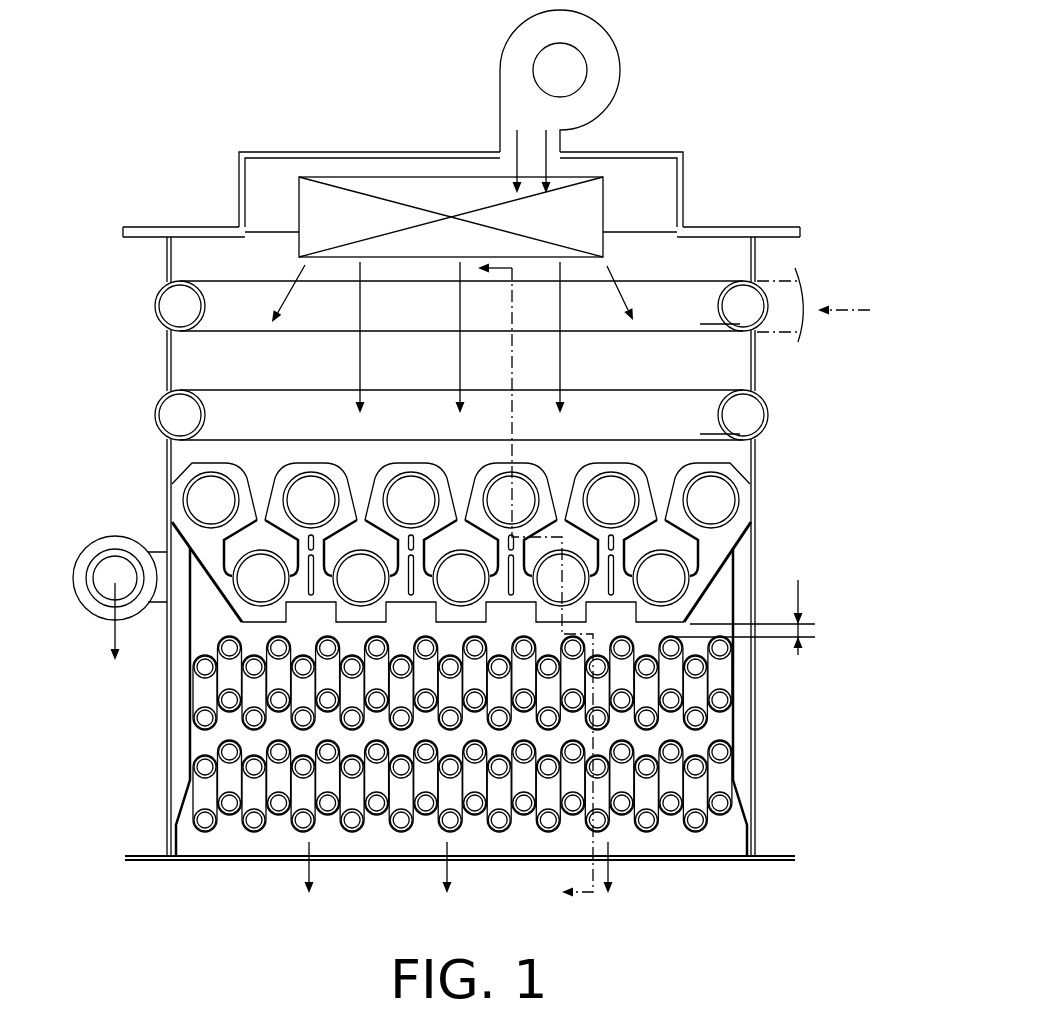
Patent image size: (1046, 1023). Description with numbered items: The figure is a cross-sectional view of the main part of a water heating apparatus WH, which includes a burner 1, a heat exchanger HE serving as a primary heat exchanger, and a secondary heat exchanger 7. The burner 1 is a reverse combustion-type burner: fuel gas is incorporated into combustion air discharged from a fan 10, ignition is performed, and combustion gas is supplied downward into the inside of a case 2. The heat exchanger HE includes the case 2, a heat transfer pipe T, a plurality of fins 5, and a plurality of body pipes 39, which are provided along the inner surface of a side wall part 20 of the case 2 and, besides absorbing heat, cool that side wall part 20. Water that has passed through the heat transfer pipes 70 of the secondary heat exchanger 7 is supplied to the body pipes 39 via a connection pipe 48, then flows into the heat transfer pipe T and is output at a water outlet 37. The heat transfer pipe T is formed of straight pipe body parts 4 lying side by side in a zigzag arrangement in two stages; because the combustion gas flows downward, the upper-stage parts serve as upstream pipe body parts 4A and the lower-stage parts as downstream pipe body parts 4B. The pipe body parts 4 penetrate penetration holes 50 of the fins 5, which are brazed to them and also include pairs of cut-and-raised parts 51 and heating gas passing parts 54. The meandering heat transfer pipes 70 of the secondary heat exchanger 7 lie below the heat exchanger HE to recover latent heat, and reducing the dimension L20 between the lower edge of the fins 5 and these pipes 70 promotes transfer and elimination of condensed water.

The water heating apparatus WH is at (160, 113).
The burner 1 is at (585, 214).
The fan 10 is at (612, 72).
The case 2 is at (166, 358).
The side wall part 20 is at (165, 252).
The body pipes 39 is at (193, 395).
The heat exchanger HE is at (469, 531).
The pipe body parts 4 is at (504, 531).
The upstream pipe body parts 4A is at (461, 464).
The downstream pipe body parts 4B is at (690, 588).
The heat transfer pipe T is at (221, 478).
The fins 5 is at (461, 512).
The penetration holes 50 is at (306, 495).
The cut-and-raised parts 51 is at (444, 522).
The heating gas passing parts 54 is at (461, 505).
The secondary heat exchanger 7 is at (445, 725).
The heat transfer pipes 70 is at (230, 819).
The water outlet 37 is at (111, 565).
The connection pipe 48 is at (783, 334).
The dimension L20 is at (758, 617).